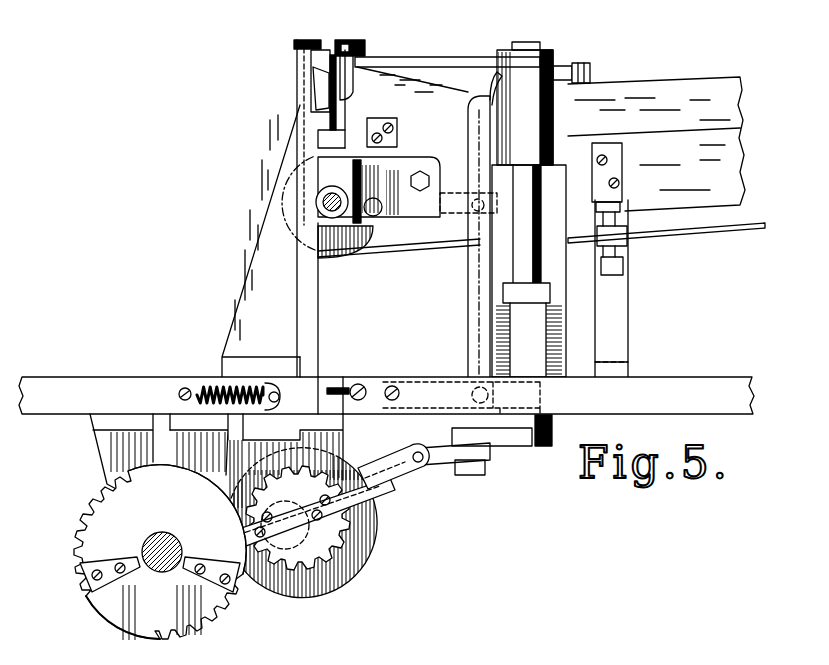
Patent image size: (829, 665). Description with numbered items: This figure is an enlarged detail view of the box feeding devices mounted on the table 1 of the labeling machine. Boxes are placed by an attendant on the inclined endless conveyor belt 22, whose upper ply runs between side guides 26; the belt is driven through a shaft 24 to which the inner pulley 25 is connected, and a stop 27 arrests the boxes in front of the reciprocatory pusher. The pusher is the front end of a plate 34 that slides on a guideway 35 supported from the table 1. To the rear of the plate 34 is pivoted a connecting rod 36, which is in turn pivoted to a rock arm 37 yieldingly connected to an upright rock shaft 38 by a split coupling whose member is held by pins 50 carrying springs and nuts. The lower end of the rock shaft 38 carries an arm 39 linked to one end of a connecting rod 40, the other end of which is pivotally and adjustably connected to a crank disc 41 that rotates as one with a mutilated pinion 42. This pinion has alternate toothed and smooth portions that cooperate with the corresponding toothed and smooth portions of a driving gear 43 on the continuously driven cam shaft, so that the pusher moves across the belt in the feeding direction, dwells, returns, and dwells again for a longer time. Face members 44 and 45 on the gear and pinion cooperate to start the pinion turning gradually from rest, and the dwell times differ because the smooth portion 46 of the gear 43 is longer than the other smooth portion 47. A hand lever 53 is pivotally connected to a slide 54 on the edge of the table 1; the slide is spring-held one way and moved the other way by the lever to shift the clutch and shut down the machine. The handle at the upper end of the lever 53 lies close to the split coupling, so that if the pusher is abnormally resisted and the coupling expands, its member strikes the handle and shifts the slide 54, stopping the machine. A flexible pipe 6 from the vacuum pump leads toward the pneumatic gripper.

The table 1 is at (156, 393).
The flexible pipe 6 is at (163, 551).
The endless conveyor belt 22 is at (692, 231).
The shaft 24 is at (326, 203).
The inner pulley 25 is at (334, 238).
The side guides 26 is at (656, 227).
The stop 27 is at (296, 44).
The plate 34 is at (319, 86).
The guideway 35 is at (313, 122).
The connecting rod 36 is at (362, 42).
The rock arm 37 is at (440, 58).
The upright rock shaft 38 is at (524, 255).
The arm 39 is at (500, 440).
The connecting rod 40 is at (362, 464).
The crank disc 41 is at (332, 557).
The mutilated pinion 42 is at (296, 552).
The driving gear 43 is at (117, 513).
The face members 44 is at (105, 566).
The face members 45 is at (358, 492).
The smooth portion 46 is at (158, 465).
The smooth portion 47 is at (107, 625).
The pins 50 is at (580, 67).
The hand lever 53 is at (480, 257).
The slide 54 is at (312, 390).